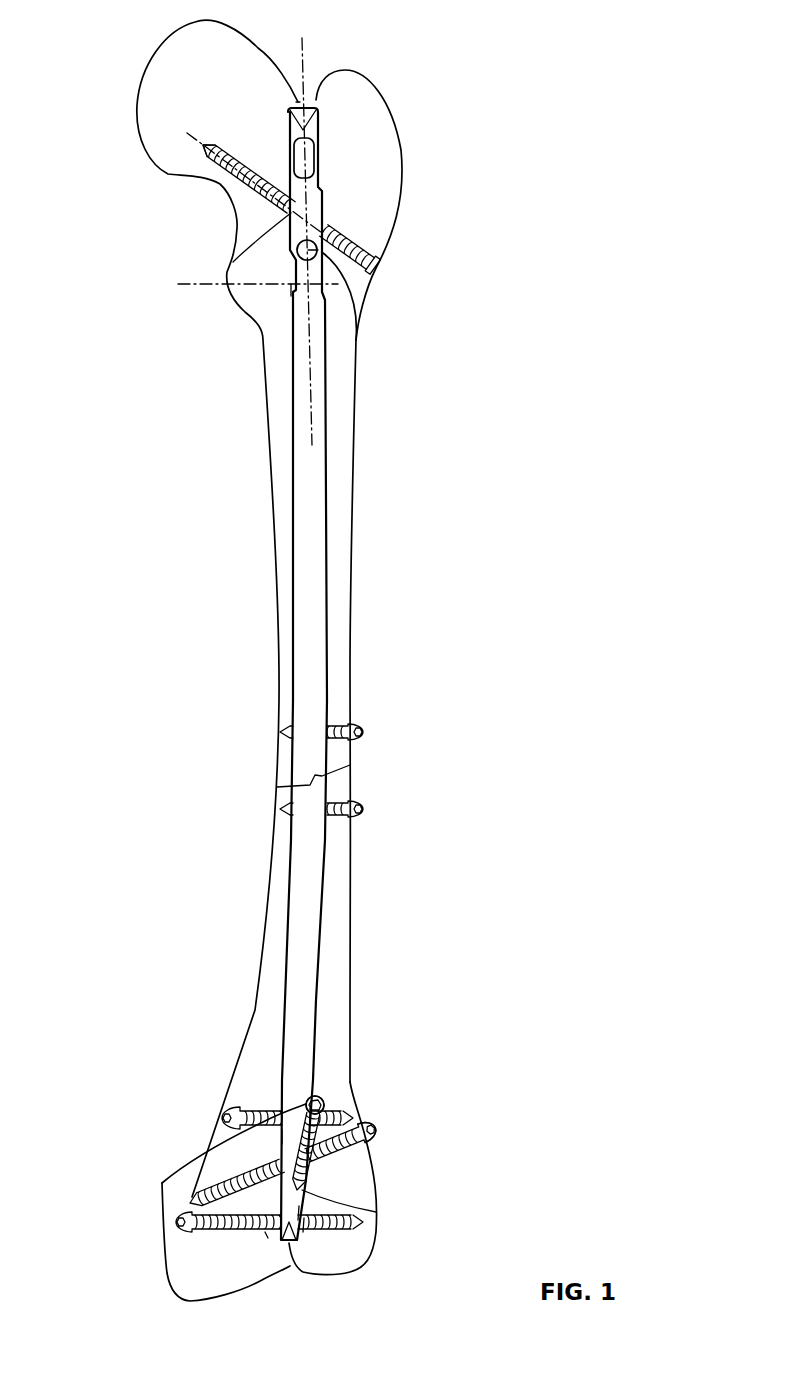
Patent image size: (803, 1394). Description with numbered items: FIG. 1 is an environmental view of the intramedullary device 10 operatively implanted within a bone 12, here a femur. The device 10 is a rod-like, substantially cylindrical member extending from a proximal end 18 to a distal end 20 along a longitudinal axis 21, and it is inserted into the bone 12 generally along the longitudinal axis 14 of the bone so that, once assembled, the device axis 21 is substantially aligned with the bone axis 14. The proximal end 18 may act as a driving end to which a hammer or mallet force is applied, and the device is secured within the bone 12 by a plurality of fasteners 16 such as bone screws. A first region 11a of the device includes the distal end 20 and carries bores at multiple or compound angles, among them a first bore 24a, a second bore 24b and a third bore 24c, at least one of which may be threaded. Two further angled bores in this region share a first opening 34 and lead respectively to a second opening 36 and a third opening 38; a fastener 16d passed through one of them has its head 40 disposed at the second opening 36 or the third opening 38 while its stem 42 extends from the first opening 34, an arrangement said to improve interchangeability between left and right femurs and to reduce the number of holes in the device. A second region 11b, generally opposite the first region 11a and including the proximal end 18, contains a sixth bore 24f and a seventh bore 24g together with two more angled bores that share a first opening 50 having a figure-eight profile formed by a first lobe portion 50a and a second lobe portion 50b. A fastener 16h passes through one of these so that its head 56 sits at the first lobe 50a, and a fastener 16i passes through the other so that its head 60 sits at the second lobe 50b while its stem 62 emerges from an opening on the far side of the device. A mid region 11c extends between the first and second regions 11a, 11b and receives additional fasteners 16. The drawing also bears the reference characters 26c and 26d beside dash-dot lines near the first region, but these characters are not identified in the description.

The intramedullary device 10 is at (386, 180).
The first region 11a is at (362, 214).
The second region 11b is at (340, 958).
The mid region 11c is at (340, 690).
The bone 12 is at (112, 106).
The longitudinal axis 14 is at (303, 52).
The fasteners 16 is at (366, 808).
The fastener 16d is at (240, 210).
The fastener 16h is at (302, 1084).
The fastener 16i is at (378, 1152).
The proximal end 18 is at (313, 1273).
The distal end 20 is at (346, 73).
The longitudinal axis 21 is at (300, 78).
The first bore 24a is at (339, 276).
The second bore 24b is at (320, 147).
The third bore 24c is at (293, 290).
The sixth bore 24f is at (279, 1137).
The seventh bore 24g is at (304, 1226).
The transverse hole axis 26c is at (192, 285).
The lag screw hole axis 26d is at (198, 137).
The first opening 34 is at (233, 262).
The second opening 36 is at (322, 223).
The third opening 38 is at (318, 178).
The head 40 is at (379, 268).
The stem 42 is at (228, 160).
The first opening 50 is at (299, 1213).
The first lobe portion 50a is at (291, 1114).
The second lobe portion 50b is at (266, 1238).
The head 56 is at (319, 1097).
The head 60 is at (376, 1126).
The stem 62 is at (212, 1232).